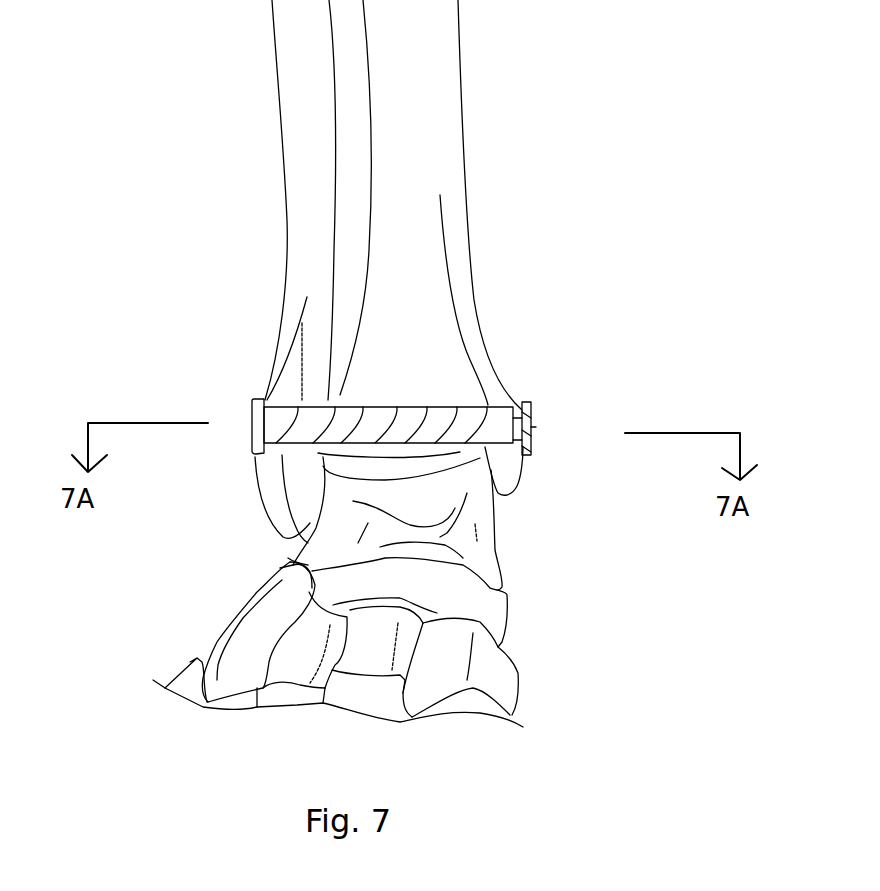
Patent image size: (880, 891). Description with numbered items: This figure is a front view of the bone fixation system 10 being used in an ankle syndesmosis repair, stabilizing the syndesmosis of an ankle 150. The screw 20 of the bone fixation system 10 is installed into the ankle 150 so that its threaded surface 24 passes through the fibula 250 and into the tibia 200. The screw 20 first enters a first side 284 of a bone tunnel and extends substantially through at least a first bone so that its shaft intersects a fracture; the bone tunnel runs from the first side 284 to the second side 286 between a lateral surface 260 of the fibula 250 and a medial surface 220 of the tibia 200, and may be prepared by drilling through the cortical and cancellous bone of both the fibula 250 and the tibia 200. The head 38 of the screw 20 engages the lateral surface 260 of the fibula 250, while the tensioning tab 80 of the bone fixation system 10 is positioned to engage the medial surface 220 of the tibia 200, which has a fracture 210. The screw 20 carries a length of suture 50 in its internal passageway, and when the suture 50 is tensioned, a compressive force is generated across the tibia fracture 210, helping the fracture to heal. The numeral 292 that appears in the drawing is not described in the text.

The bone fixation system 10 is at (389, 383).
The screw 20 is at (410, 407).
The threaded surface 24 is at (352, 407).
The screw head 38 is at (267, 394).
The length of suture 50 is at (536, 427).
The tensioning tab 80 is at (539, 385).
The ankle 150 is at (534, 504).
The tibia 200 is at (413, 152).
The fracture 210 is at (497, 378).
The medial surface 220 is at (483, 332).
The fibula 250 is at (293, 204).
The lateral surface 260 is at (253, 472).
The first side 284 is at (302, 333).
The second side 286 is at (526, 466).
The medial bone surface 292 is at (307, 455).